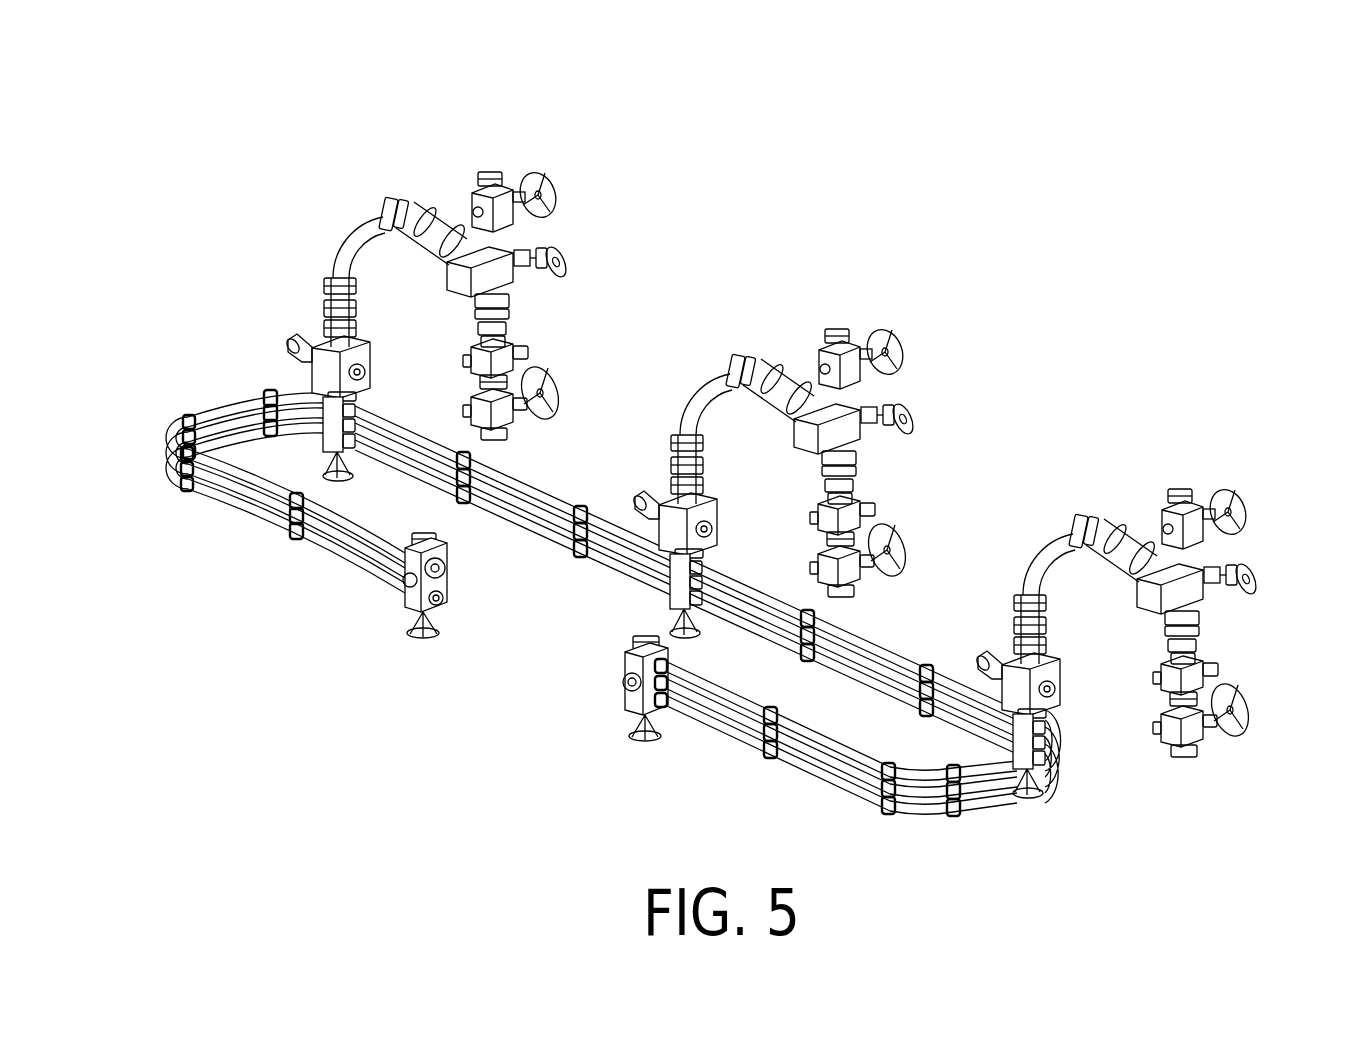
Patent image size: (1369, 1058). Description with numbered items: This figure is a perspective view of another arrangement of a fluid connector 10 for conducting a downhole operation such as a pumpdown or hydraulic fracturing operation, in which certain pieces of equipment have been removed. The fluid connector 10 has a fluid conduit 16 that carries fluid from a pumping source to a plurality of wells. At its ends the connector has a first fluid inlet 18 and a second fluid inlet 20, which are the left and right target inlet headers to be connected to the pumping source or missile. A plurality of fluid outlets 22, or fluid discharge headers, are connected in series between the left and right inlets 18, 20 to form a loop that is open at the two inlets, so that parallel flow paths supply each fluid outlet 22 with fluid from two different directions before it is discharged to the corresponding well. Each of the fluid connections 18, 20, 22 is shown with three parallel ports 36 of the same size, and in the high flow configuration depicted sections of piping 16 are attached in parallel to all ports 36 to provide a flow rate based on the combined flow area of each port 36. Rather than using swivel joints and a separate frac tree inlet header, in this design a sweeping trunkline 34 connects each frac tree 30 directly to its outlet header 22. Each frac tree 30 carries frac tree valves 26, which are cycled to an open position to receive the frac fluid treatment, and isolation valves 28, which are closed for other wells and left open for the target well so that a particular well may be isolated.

The fluid connector 10 is at (738, 510).
The fluid conduit 16 is at (222, 412).
The first fluid inlet 18 is at (400, 596).
The second fluid inlet 20 is at (624, 731).
The fluid outlet 22 is at (333, 420).
The frac tree valve 26 is at (497, 357).
The isolation valve 28 is at (457, 217).
The frac tree 30 is at (505, 272).
The sweeping trunkline 34 is at (362, 228).
The parallel port 36 is at (662, 706).